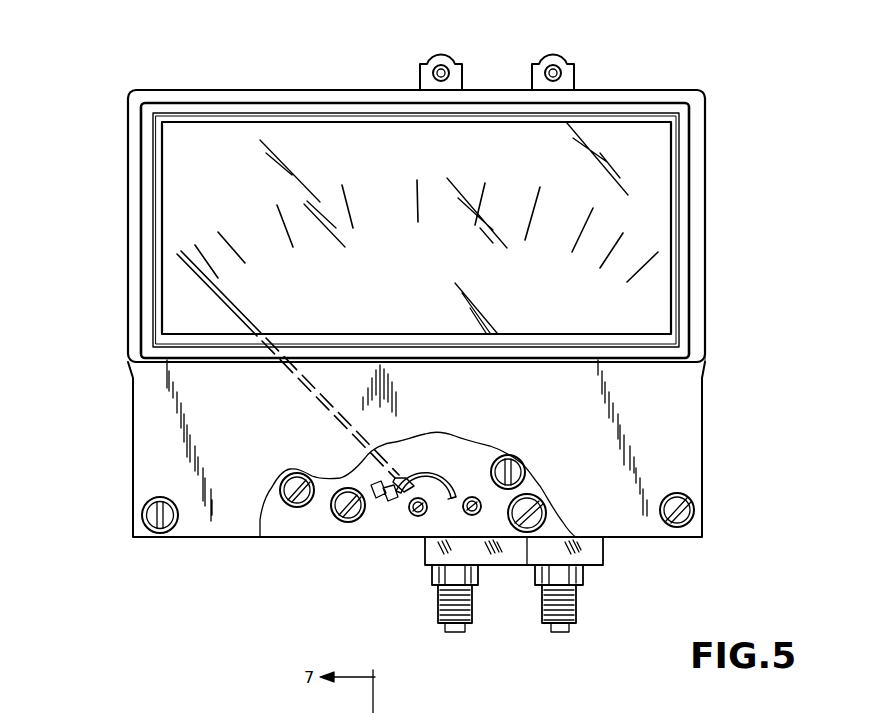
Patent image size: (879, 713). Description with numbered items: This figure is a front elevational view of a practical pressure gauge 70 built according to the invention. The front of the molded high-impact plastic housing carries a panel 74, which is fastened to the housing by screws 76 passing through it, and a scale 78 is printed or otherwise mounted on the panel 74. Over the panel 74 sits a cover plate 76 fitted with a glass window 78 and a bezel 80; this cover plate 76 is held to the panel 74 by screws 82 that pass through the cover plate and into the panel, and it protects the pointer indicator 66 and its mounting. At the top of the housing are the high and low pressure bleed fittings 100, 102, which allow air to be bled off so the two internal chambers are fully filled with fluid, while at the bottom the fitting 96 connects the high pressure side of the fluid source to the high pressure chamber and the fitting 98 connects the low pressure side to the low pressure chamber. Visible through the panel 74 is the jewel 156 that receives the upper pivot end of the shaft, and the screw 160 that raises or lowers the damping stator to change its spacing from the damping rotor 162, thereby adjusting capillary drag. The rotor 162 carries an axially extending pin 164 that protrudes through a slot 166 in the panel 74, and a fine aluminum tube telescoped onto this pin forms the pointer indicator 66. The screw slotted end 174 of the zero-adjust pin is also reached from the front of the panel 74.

The gauge 70 is at (745, 268).
The bezel 80 is at (160, 229).
The glass window 78 is at (371, 140).
The high pressure bleed fitting 100 is at (462, 78).
The low pressure bleed fitting 102 is at (571, 78).
The cover plate 76 is at (163, 429).
The screws 82 is at (150, 536).
The panel 74 is at (268, 530).
The screw slotted end 174 is at (336, 520).
The pointer indicator 66 is at (228, 305).
The pin 164 is at (388, 500).
The jewel 156 is at (416, 513).
The damping rotor 162 is at (440, 494).
The slot 166 is at (448, 499).
The screw 160 is at (478, 515).
The fitting 96 is at (433, 623).
The fitting 98 is at (566, 635).